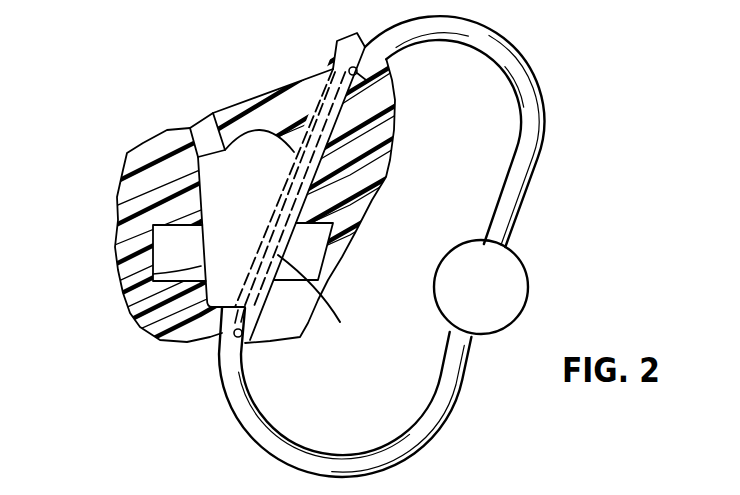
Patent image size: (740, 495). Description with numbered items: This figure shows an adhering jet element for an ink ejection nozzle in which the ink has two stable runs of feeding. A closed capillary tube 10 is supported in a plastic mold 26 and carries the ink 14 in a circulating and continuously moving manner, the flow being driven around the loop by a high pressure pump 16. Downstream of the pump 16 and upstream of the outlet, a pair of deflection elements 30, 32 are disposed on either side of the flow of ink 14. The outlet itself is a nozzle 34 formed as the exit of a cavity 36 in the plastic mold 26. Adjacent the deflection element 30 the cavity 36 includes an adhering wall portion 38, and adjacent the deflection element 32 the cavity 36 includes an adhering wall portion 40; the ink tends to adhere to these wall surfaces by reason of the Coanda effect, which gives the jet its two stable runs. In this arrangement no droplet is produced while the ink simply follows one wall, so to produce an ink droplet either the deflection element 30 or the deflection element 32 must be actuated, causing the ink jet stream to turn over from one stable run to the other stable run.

The closed capillary tube 10 is at (432, 383).
The ink 14 is at (338, 90).
The high pressure pump 16 is at (520, 265).
The plastic mold 26 is at (390, 160).
The deflection element 30 is at (320, 233).
The deflection element 32 is at (163, 241).
The nozzle 34 is at (200, 130).
The cavity 36 is at (258, 147).
The adhering wall portion 38 is at (336, 313).
The adhering wall portion 40 is at (125, 286).